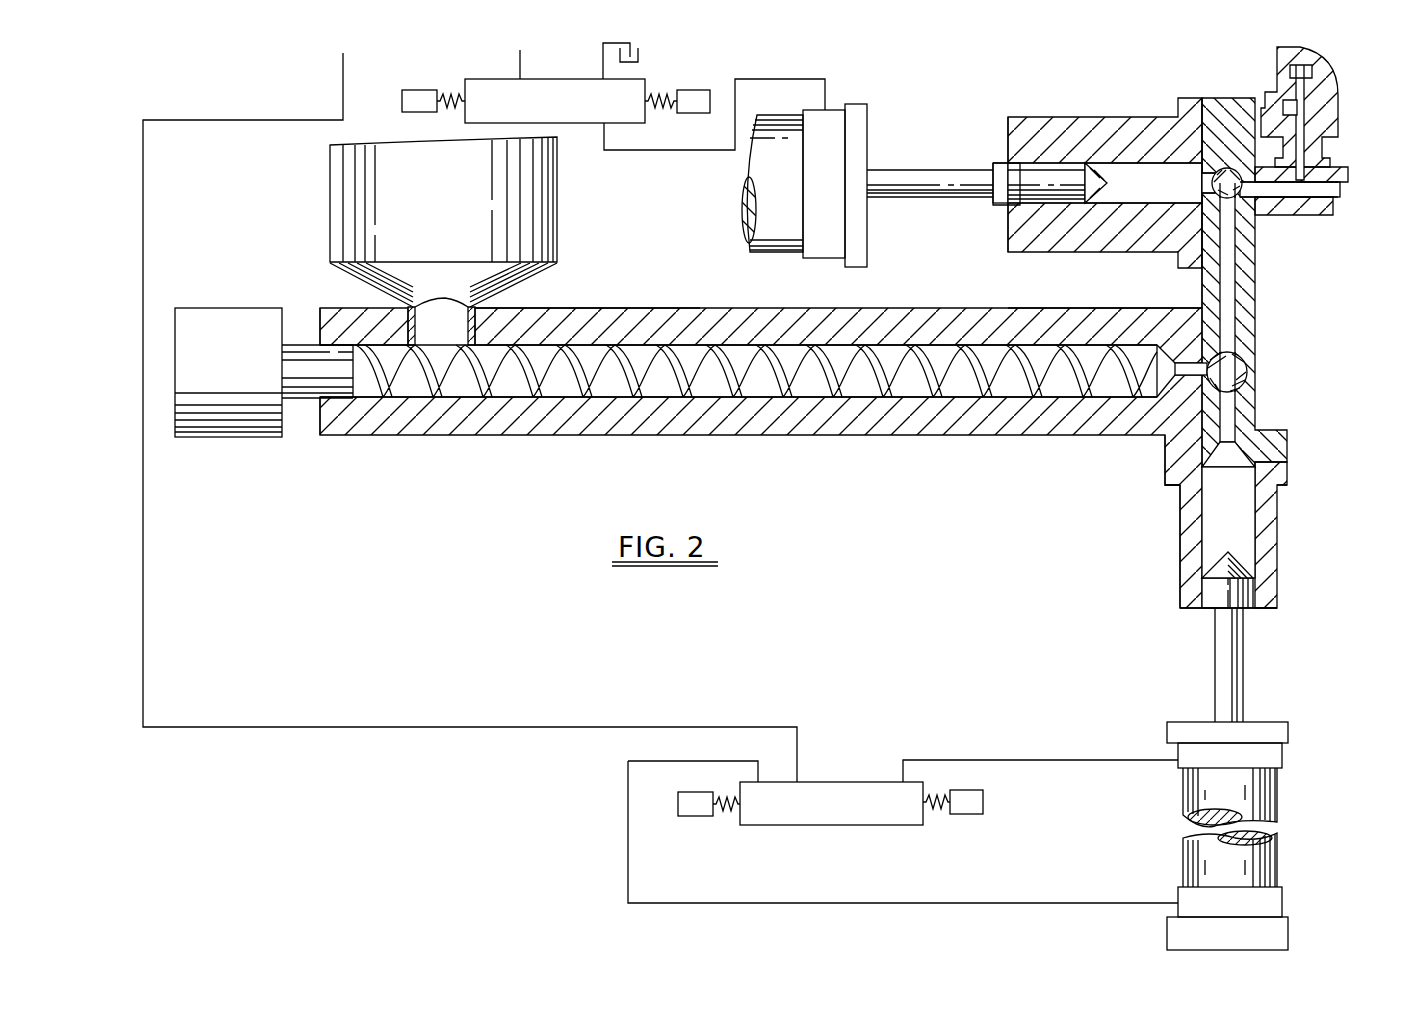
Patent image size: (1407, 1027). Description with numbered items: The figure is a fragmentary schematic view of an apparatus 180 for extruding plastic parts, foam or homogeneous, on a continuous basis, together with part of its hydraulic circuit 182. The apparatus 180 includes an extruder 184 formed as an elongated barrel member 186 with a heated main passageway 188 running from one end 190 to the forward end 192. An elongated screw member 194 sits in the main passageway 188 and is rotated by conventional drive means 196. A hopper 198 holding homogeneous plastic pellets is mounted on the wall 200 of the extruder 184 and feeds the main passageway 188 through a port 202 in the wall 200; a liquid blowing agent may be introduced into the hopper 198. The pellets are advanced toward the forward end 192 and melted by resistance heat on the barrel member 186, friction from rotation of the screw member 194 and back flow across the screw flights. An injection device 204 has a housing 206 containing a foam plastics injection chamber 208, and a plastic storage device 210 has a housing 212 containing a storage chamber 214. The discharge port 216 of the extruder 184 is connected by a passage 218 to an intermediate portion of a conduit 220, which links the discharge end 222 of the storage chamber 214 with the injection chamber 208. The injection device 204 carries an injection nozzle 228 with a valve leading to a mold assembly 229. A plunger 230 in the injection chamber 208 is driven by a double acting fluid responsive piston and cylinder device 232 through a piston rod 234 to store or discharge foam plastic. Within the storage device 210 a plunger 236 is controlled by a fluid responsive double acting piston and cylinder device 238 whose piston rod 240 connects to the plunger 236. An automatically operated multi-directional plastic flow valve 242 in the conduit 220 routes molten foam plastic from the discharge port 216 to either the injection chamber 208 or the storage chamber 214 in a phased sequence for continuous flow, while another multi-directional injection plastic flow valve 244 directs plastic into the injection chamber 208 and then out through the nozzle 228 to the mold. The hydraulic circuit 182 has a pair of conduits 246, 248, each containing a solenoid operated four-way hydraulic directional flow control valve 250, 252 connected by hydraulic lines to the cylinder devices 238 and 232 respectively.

The apparatus 180 is at (440, 598).
The hydraulic circuit 182 is at (350, 728).
The extruder 184 is at (397, 453).
The barrel member 186 is at (577, 432).
The main passageway 188 is at (617, 307).
The one end of the barrel member 190 is at (330, 318).
The forward end of the barrel member 192 is at (1143, 297).
The screw member 194 is at (498, 387).
The drive means 196 is at (227, 313).
The hopper 198 is at (550, 222).
The wall of the extruder 200 is at (535, 313).
The port 202 is at (418, 324).
The injection device 204 is at (1002, 250).
The housing of the injection device 206 is at (1128, 127).
The injection chamber 208 is at (1190, 201).
The plastic storage device 210 is at (1285, 547).
The housing of the storage device 212 is at (1192, 543).
The storage chamber 214 is at (1210, 517).
The discharge port 216 is at (1163, 363).
The passage 218 is at (1187, 370).
The conduit 220 is at (1228, 310).
The discharge end of the storage chamber 222 is at (1255, 463).
The injection nozzle 228 is at (1315, 158).
The mold assembly 229 is at (1337, 100).
The plunger 230 is at (1040, 177).
The double acting fluid responsive piston and cylinder device 232 is at (773, 213).
The piston rod 234 is at (930, 167).
The plunger of the storage device 236 is at (1218, 595).
The fluid responsive double acting piston and cylinder device 238 is at (1267, 863).
The piston rod 240 is at (1228, 658).
The multi-directional plastic flow valve 242 is at (1247, 372).
The multi-directional injection plastic flow valve 244 is at (1217, 170).
The conduit 246 is at (145, 213).
The conduit 248 is at (522, 62).
The solenoid operated four-way hydraulic directional flow control valve 250 is at (822, 815).
The solenoid operated four-way hydraulic directional flow control valve 252 is at (613, 114).